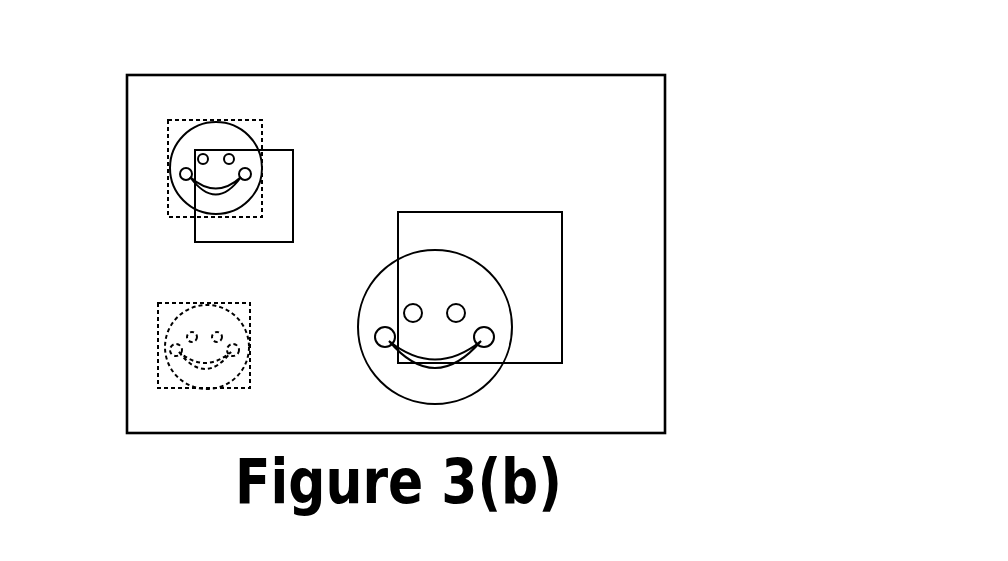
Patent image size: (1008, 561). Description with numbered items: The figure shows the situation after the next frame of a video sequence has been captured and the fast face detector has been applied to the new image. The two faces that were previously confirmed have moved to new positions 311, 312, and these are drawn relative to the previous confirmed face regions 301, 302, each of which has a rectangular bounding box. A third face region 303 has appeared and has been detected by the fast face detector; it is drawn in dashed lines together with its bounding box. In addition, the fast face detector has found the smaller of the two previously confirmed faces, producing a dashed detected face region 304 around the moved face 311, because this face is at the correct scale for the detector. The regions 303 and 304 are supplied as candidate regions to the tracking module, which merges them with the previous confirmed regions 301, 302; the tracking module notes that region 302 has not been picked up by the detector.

The confirmed face region 301 is at (295, 150).
The confirmed face region 302 is at (562, 288).
The third face region 303 is at (160, 343).
The detected face region 304 is at (170, 162).
The moved face 311 is at (220, 138).
The moved face 312 is at (427, 287).